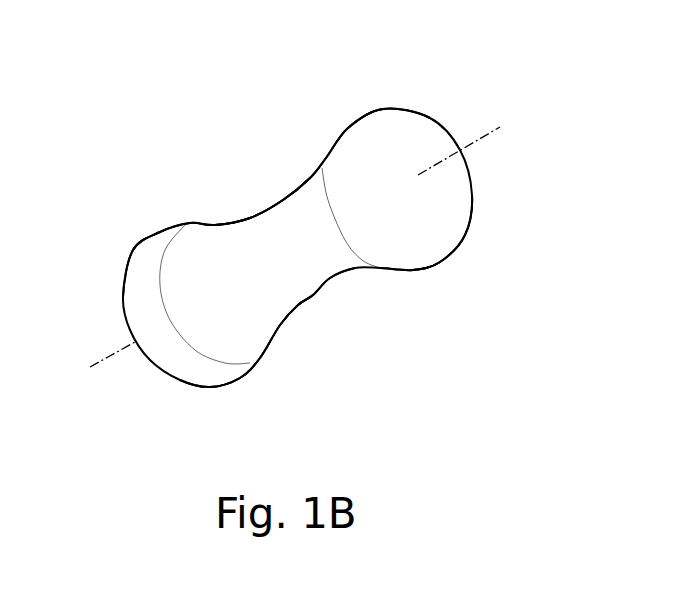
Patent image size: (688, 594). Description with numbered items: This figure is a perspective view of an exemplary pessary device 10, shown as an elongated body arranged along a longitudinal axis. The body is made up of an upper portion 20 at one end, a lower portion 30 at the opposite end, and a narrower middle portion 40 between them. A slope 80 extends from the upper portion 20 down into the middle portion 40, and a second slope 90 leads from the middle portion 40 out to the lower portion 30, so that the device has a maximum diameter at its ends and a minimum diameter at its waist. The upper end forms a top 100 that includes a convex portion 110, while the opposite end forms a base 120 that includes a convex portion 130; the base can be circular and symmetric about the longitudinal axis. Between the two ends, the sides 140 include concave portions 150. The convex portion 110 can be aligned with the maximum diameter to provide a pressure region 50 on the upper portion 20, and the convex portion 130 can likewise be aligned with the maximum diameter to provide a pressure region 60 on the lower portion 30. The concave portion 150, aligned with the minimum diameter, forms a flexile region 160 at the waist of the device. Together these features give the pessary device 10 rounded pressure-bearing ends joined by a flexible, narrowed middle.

The pessary device 10 is at (520, 73).
The upper portion 20 is at (440, 265).
The lower portion 30 is at (228, 387).
The middle portion 40 is at (313, 295).
The pressure region of the upper portion 50 is at (413, 272).
The pressure region of the lower portion 60 is at (215, 388).
The slope 80 is at (308, 180).
The slope 90 is at (215, 224).
The top 100 is at (373, 108).
The convex portion 110 is at (358, 112).
The base 120 is at (138, 250).
The convex portion 130 is at (150, 236).
The sides 140 is at (252, 219).
The concave portion 150 is at (283, 202).
The flexile region 160 is at (298, 303).